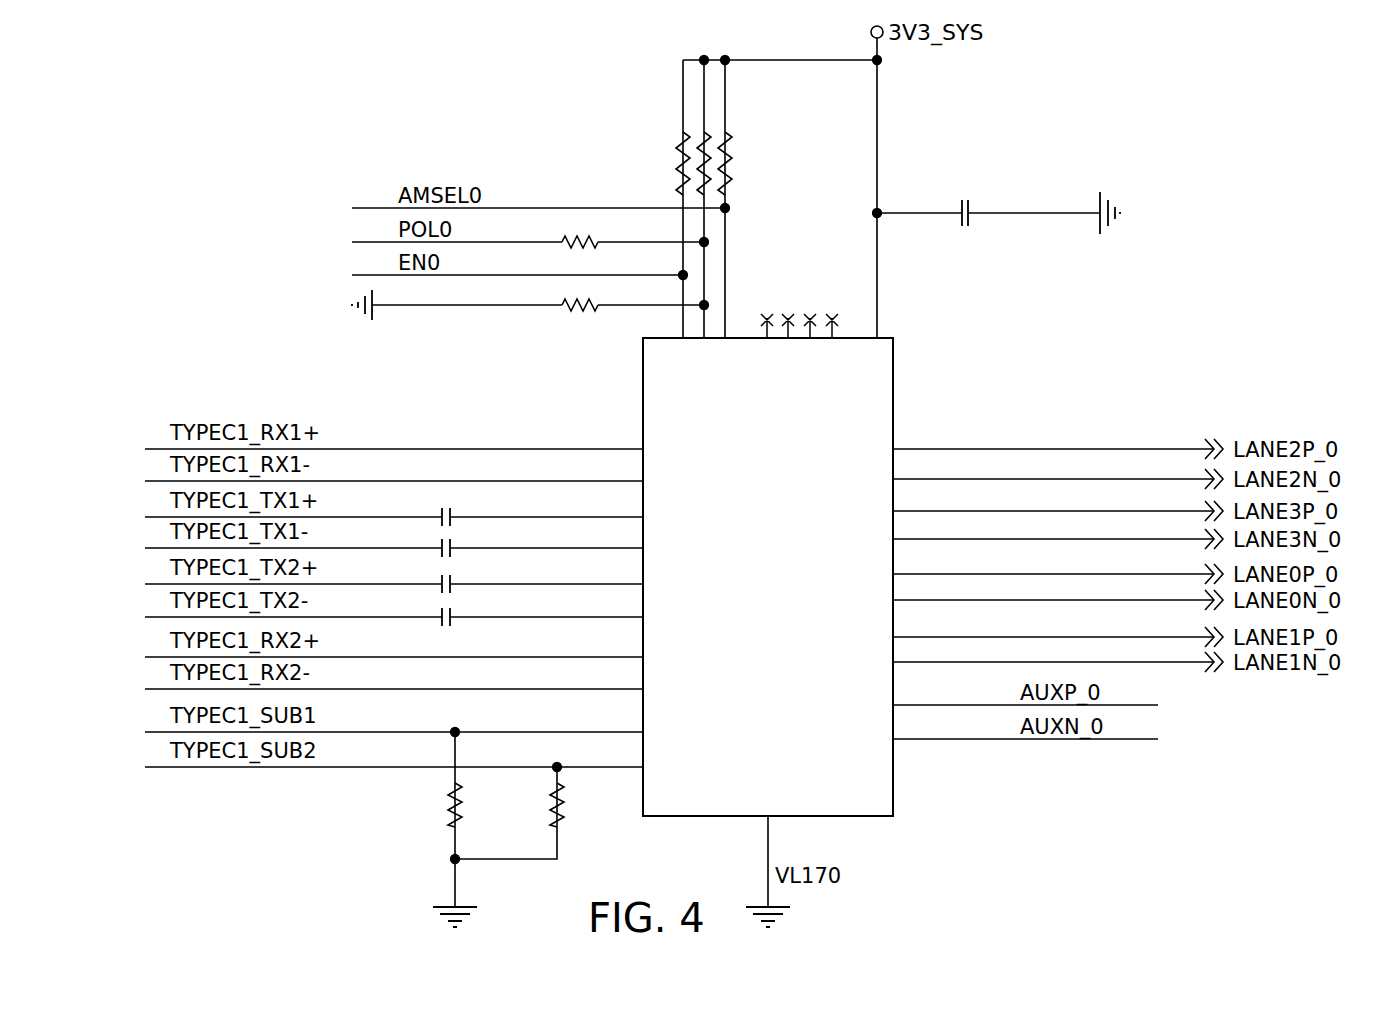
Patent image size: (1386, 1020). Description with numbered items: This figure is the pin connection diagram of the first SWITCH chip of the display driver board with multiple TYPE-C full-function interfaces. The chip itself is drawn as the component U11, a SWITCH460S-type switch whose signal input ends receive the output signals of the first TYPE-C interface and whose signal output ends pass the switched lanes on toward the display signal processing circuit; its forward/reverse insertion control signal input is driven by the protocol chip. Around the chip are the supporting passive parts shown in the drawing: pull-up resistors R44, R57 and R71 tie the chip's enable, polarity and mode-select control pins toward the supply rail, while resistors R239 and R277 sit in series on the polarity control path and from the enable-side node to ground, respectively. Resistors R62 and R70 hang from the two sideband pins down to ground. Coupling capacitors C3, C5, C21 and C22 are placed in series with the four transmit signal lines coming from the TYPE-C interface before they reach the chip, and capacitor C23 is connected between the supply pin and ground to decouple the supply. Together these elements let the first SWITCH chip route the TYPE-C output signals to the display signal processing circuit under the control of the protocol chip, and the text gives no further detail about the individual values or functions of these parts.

The VL170 USB Type-C signal switch IC U11 is at (893, 404).
The 10K pull-up resistor (POL) R44 is at (705, 132).
The 10K pull-up resistor (AMSEL) R57 is at (748, 167).
The 10K pull-up resistor (EN) R71 is at (659, 167).
The 1K series resistor (POL0) R239 is at (564, 233).
The 2K resistor to ground R277 is at (564, 296).
The 1M resistor (CSBU1) R62 is at (429, 808).
The 1M resistor (CSBU2) R70 is at (531, 808).
The 0.1uF coupling capacitor (TX1+) C3 is at (459, 510).
The 0.1uF coupling capacitor (TX1-) C5 is at (459, 540).
The 0.1uF coupling capacitor (TX2+) C21 is at (453, 577).
The 0.1uF coupling capacitor (TX2-) C22 is at (453, 609).
The 0.1uF decoupling capacitor (VCC) C23 is at (969, 206).